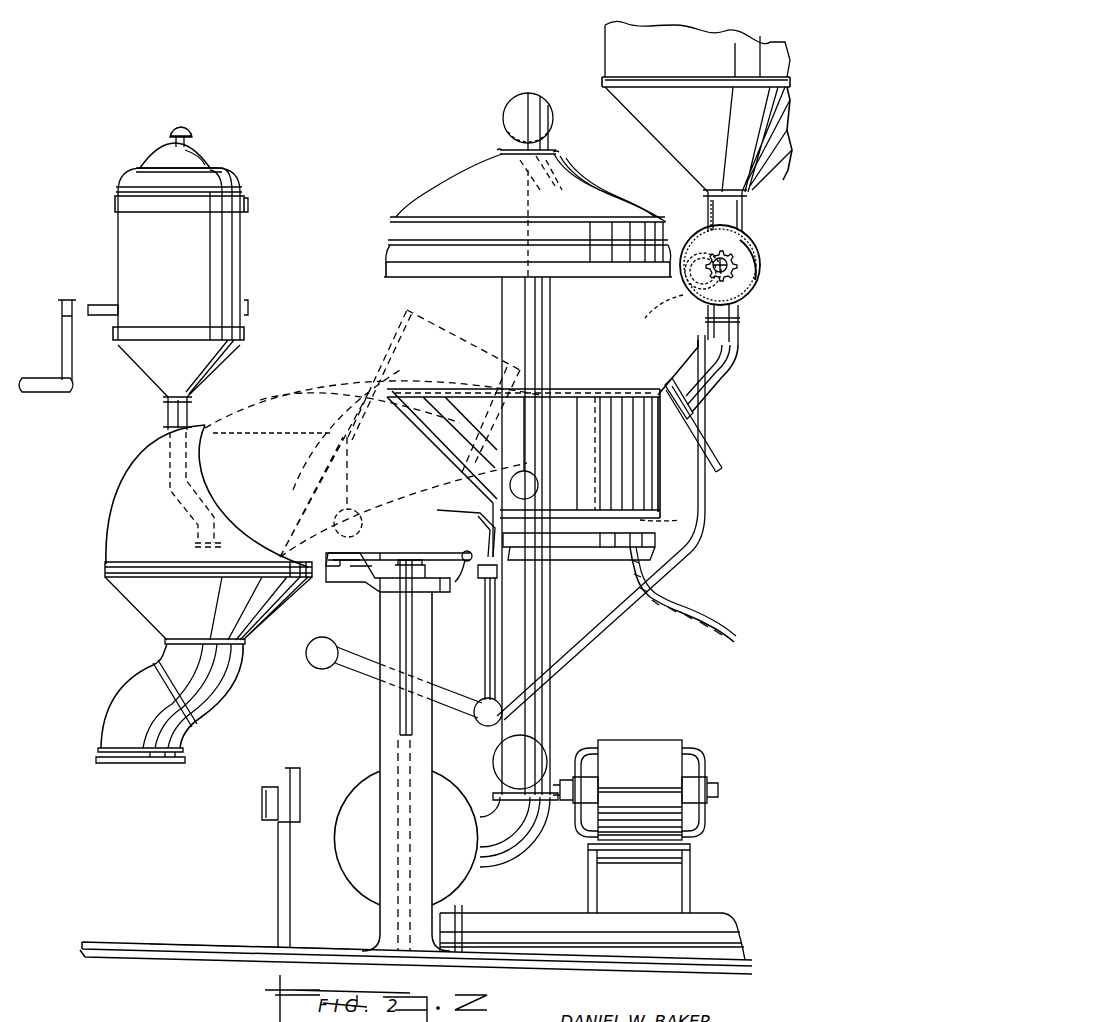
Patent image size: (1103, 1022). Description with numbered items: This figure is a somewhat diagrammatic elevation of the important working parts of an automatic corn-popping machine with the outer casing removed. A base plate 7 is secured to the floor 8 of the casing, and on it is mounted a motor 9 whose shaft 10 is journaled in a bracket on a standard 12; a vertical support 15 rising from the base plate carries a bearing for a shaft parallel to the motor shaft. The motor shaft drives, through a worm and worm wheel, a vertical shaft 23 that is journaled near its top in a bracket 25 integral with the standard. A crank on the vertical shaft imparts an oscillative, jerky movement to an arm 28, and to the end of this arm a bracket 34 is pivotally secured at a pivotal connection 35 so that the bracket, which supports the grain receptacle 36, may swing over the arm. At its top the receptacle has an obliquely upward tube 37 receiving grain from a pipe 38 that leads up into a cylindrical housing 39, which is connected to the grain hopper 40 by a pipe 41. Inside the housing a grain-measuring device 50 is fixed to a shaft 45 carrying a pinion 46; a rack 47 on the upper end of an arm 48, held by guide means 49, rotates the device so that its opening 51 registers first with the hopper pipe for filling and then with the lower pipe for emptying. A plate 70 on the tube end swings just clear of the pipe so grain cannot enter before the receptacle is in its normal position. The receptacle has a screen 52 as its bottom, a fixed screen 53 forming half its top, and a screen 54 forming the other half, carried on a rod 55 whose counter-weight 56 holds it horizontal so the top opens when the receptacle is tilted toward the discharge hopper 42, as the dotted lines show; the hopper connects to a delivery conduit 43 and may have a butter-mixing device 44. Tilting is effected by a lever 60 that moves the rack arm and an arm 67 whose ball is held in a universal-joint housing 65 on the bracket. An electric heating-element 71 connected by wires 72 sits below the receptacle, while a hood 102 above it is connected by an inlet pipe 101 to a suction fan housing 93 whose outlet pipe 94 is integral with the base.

The base plate 7 is at (160, 945).
The floor 8 is at (128, 957).
The motor 9 is at (705, 768).
The shaft 10 is at (560, 800).
The standard 12 is at (380, 732).
The vertical support 15 is at (278, 899).
The vertical shaft 23 is at (400, 637).
The bracket 25 is at (380, 583).
The arm 28 is at (408, 556).
The bracket 34 is at (465, 551).
The pivotal connection 35 is at (467, 561).
The receptacle 36 is at (523, 473).
The tube 37 is at (660, 384).
The pipe 38 is at (740, 352).
The cylindrical housing 39 is at (758, 249).
The grain hopper 40 is at (697, 106).
The pipe 41 is at (744, 205).
The discharge hopper 42 is at (208, 534).
The delivery conduit 43 is at (169, 703).
The device 44 is at (133, 337).
The shaft 45 is at (730, 258).
The pinion 46 is at (735, 265).
The rack 47 is at (695, 248).
The arm 48 is at (708, 416).
The guide means 49 is at (664, 311).
The grain-measuring device 50 is at (757, 280).
The opening 51 is at (740, 320).
The screen 52 is at (648, 533).
The screen 53 is at (610, 390).
The screen 54 is at (436, 380).
The rod 55 is at (525, 402).
The counter-weight 56 is at (538, 485).
The lever 60 is at (462, 720).
The universal-joint housing 65 is at (497, 580).
The arm 67 is at (485, 640).
The plate 70 is at (722, 447).
The electric heating-element 71 is at (640, 550).
The wires 72 is at (660, 620).
The housing 93 is at (405, 838).
The outlet pipe 94 is at (592, 932).
The inlet pipe 101 is at (553, 330).
The hood 102 is at (528, 185).